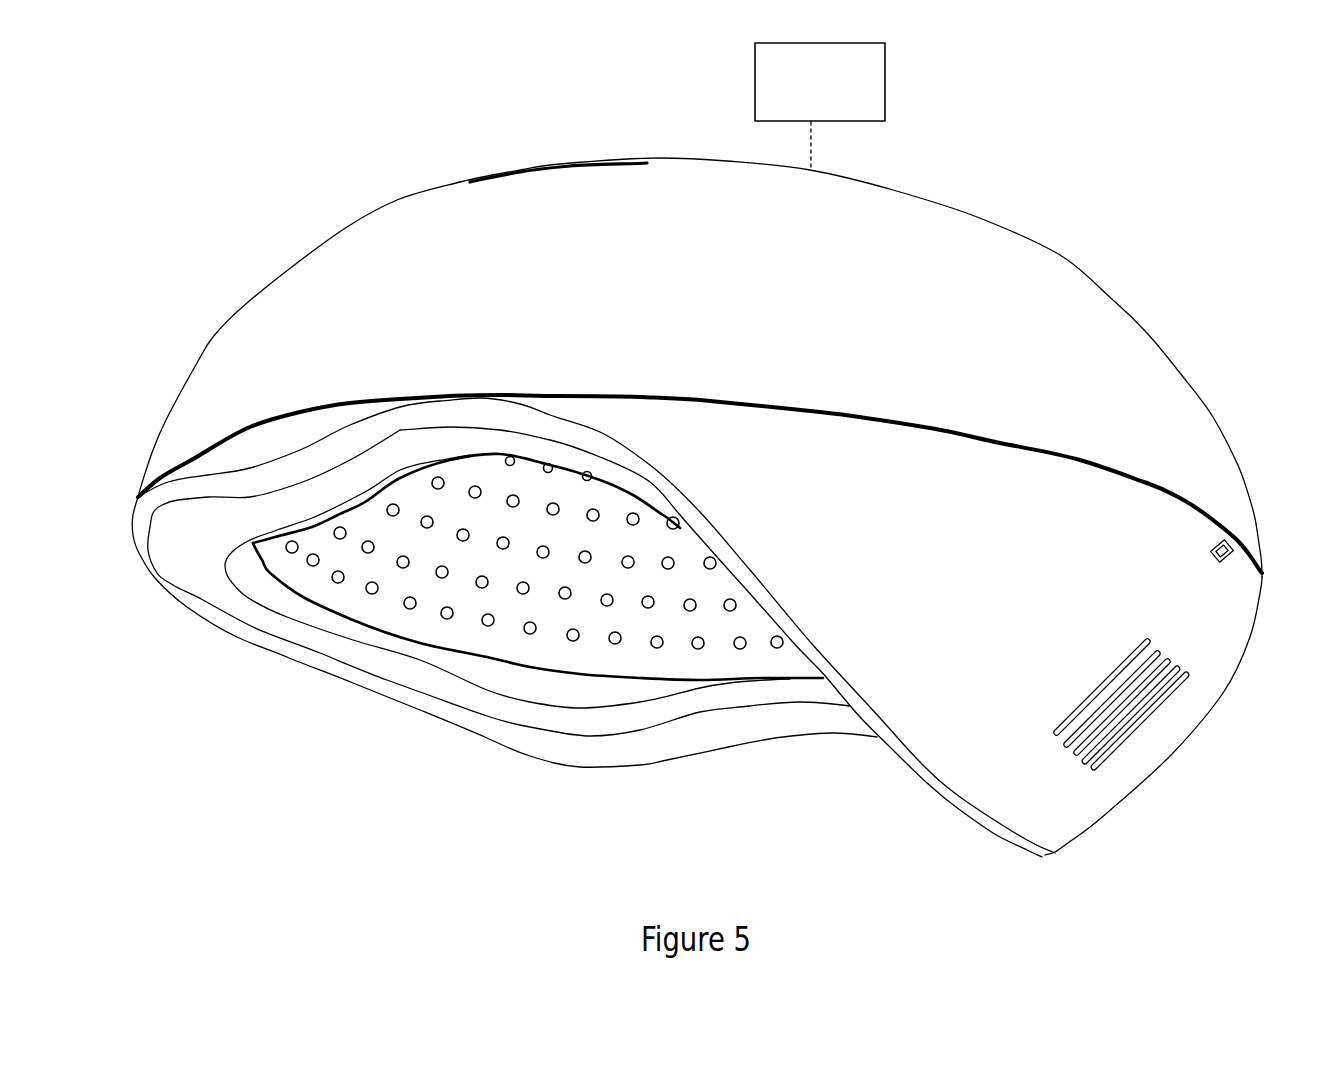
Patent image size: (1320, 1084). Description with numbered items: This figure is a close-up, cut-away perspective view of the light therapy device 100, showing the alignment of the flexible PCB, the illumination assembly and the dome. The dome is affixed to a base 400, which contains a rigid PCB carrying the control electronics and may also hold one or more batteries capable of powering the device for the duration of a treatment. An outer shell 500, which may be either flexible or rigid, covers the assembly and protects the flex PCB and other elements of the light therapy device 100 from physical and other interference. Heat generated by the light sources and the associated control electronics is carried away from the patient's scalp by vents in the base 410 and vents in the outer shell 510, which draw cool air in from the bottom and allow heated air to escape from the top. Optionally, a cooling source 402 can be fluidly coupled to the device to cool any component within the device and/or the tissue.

The light therapy device 100 is at (463, 632).
The base 400 is at (1120, 812).
The cooling source 402 is at (820, 106).
The vents in the base 410 is at (1153, 722).
The outer shell 500 is at (1083, 268).
The vents in the outer shell 510 is at (619, 170).